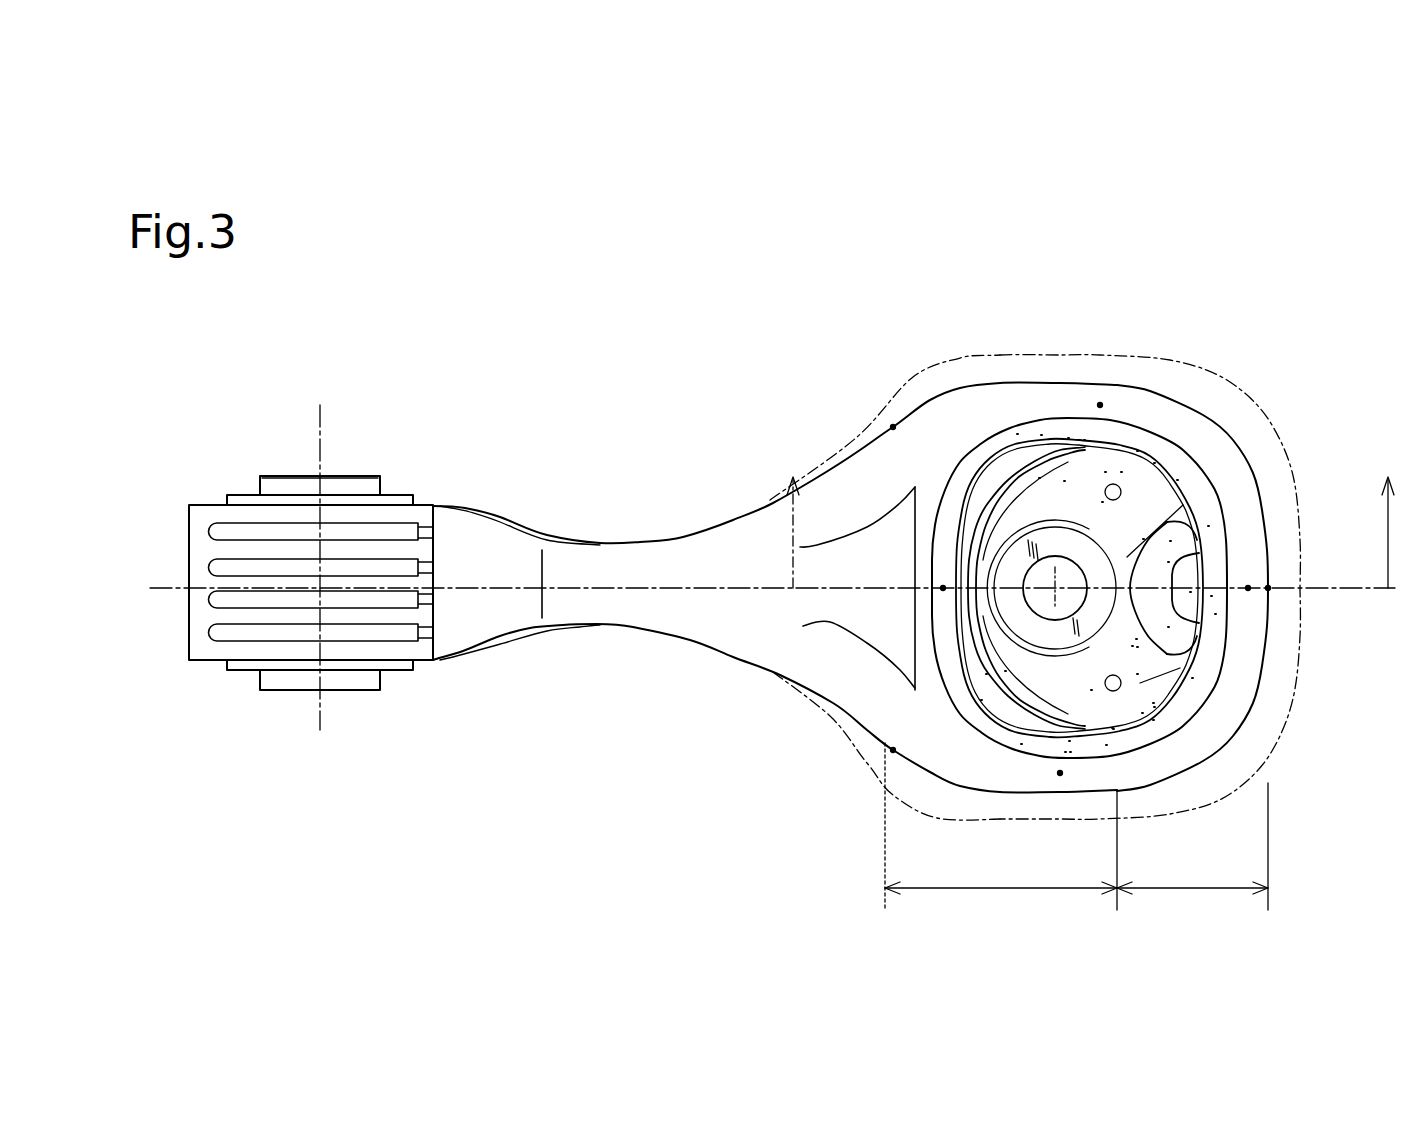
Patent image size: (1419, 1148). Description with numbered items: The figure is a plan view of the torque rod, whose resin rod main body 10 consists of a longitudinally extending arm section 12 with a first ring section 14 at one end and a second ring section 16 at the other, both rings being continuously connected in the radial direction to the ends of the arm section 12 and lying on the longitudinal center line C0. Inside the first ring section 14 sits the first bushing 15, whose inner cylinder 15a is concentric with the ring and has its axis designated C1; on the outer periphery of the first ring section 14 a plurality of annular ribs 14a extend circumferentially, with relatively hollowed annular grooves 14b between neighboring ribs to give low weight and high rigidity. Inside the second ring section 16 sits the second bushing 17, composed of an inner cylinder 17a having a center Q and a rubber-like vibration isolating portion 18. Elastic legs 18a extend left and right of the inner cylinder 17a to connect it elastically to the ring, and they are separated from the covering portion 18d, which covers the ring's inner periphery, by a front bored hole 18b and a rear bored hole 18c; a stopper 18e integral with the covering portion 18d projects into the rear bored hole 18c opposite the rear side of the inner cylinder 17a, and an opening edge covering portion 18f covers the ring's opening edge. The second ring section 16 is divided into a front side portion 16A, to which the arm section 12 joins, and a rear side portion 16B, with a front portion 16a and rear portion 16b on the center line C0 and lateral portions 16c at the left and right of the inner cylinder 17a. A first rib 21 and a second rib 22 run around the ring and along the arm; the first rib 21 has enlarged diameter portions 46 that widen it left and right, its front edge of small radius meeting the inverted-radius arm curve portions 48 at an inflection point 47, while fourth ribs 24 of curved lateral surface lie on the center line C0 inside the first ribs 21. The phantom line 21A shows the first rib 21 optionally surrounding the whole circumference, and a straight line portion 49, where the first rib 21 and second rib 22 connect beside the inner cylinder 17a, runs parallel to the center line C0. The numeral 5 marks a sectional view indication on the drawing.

The rod main body 10 is at (580, 498).
The arm section 12 is at (640, 542).
The first ring section 14 is at (190, 497).
The annular ribs 14a is at (245, 510).
The annular grooves 14b is at (213, 532).
The first bushing 15 is at (378, 478).
The inner cylinder 15a is at (347, 478).
The second ring section 16 is at (1207, 417).
The front portion 16a is at (943, 588).
The rear portion 16b is at (1248, 588).
The lateral portions 16c is at (1100, 405).
The front side portion 16A is at (1001, 832).
The rear side portion 16B is at (1192, 852).
The second bushing 17 is at (1175, 472).
The inner cylinder 17a is at (995, 735).
The vibration isolating portion 18 is at (1062, 483).
The elastic legs 18a is at (1162, 487).
The front bored hole 18b is at (997, 477).
The rear bored hole 18c is at (1140, 683).
The covering portion 18d is at (1018, 470).
The stopper 18e is at (1183, 573).
The opening edge covering portion 18f is at (1033, 745).
The first rib 21 is at (858, 467).
The phantom line 21A is at (1172, 358).
The second rib 22 is at (1247, 522).
The fourth ribs 24 is at (803, 628).
The enlarged diameter portions 46 is at (910, 420).
The inflection point 47 is at (893, 427).
The arm curve portions 48 is at (733, 519).
The straight line portion 49 is at (1113, 483).
The section line 5 is at (1096, 508).
The center line C0 is at (753, 588).
The axis of inner cylinder C1 is at (325, 548).
The center Q is at (1055, 590).